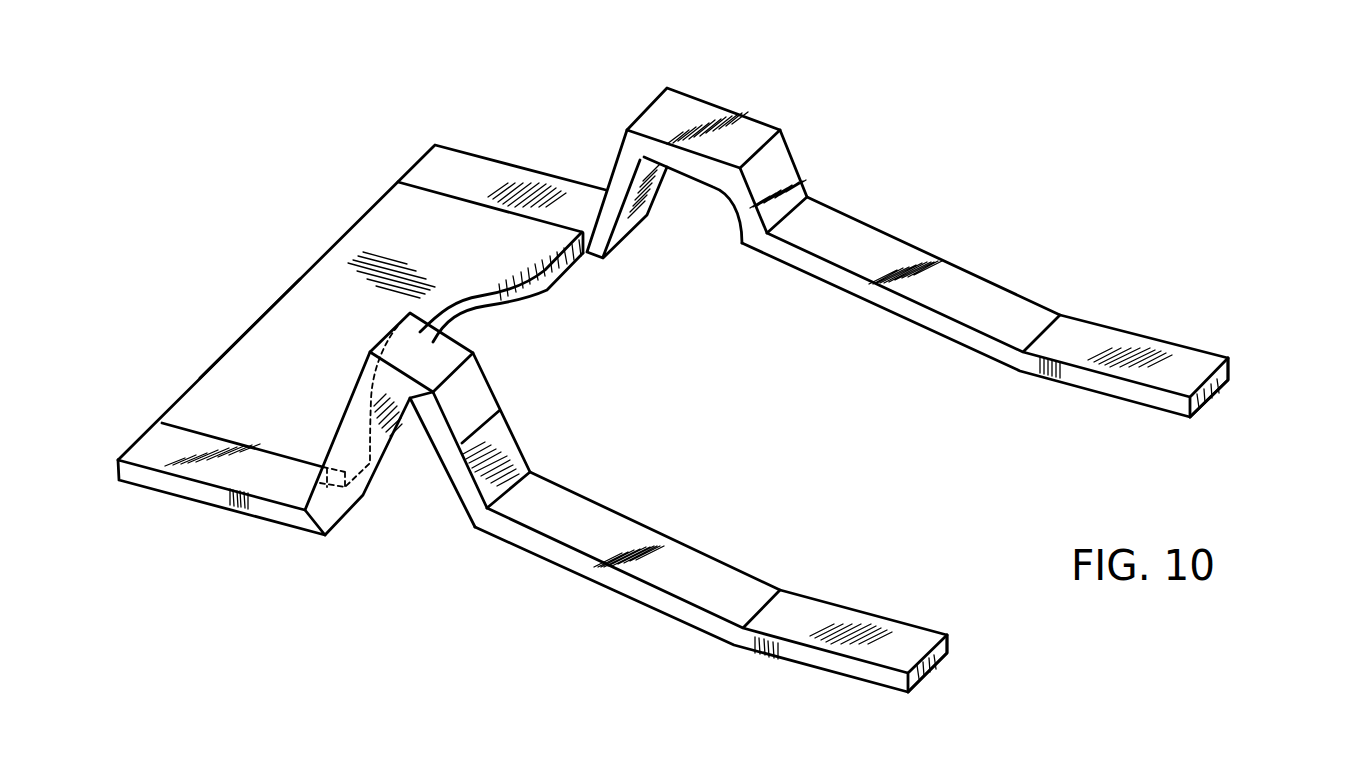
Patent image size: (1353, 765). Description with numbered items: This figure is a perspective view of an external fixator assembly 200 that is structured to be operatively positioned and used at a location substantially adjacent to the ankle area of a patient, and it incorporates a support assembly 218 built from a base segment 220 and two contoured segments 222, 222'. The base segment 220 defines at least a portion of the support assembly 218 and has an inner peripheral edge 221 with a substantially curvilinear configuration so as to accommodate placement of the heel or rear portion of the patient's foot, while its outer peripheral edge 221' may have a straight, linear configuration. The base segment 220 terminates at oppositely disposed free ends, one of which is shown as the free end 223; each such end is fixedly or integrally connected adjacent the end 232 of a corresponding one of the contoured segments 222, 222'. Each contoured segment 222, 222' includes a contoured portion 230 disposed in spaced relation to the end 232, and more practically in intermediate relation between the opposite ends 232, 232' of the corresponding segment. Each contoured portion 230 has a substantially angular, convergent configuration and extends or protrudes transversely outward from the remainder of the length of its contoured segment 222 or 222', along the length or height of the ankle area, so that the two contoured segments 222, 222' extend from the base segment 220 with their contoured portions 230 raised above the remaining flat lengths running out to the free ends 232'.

The external fixator assembly 200 is at (905, 118).
The support assembly 218 is at (400, 557).
The base segment 220 is at (333, 280).
The inner peripheral edge 221 is at (506, 359).
The outer peripheral edge 221' is at (230, 280).
The contoured segment 222 is at (687, 582).
The contoured segment 222' is at (985, 288).
The free end 223 is at (467, 202).
The contoured portion 230 is at (738, 95).
The end of contoured segment 232 is at (297, 252).
The opposite end of contoured segment 232' is at (1130, 548).